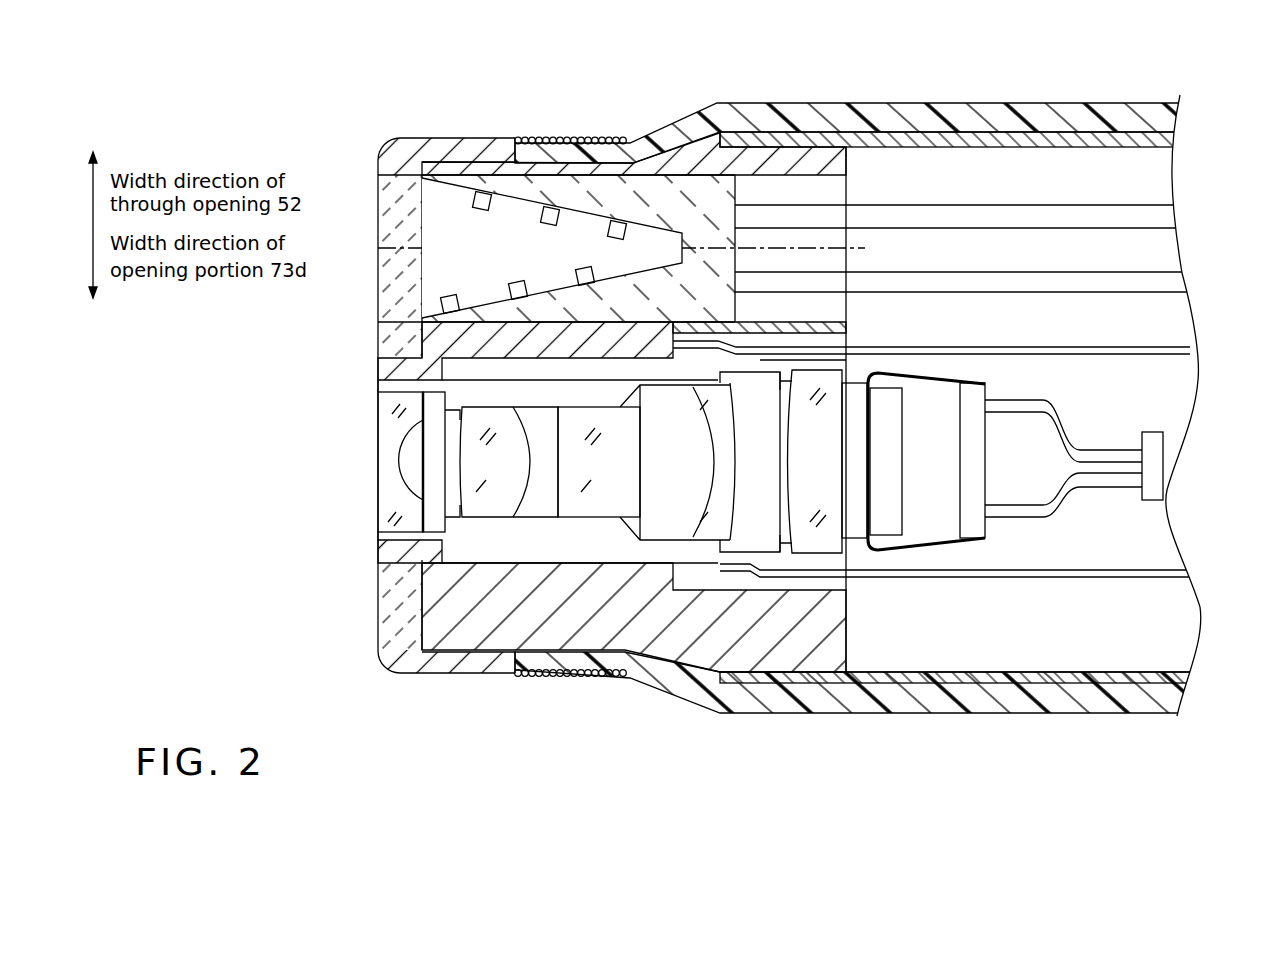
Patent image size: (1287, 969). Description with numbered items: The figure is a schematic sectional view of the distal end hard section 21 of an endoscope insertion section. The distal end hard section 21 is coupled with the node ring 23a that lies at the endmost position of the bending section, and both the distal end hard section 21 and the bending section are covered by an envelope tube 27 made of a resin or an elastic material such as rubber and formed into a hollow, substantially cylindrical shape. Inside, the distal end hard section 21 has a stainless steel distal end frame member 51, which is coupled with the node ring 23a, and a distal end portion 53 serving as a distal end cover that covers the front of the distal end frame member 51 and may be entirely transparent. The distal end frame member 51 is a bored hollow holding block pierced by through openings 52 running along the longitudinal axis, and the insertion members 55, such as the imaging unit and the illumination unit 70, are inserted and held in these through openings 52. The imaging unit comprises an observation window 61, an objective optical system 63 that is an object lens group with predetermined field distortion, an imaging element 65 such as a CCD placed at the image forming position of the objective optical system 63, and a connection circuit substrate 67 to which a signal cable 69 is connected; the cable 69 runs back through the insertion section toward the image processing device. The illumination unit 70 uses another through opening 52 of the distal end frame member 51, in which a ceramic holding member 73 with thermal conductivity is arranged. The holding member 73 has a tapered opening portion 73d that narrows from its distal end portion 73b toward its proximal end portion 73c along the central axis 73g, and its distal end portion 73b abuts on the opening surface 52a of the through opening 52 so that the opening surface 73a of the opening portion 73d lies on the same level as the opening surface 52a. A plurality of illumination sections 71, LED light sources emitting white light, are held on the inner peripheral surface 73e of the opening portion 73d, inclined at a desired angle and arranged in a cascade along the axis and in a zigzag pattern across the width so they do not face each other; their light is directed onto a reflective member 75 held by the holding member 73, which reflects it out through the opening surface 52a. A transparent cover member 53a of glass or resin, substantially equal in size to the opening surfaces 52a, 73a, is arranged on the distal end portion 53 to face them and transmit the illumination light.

The distal end hard section 21 is at (362, 122).
The node ring 23a is at (937, 137).
The envelope tube 27 is at (985, 110).
The distal end frame member 51 is at (470, 655).
The through opening 52 is at (848, 192).
The opening surface 52a is at (422, 228).
The distal end portion 53 is at (380, 163).
The cover member 53a is at (388, 247).
The insertion members 55 is at (1070, 157).
The observation window 61 is at (378, 497).
The objective optical system 63 is at (630, 552).
The imaging element 65 is at (892, 530).
The connection circuit substrate 67 is at (973, 536).
The cable 69 is at (1165, 472).
The illumination unit 70 is at (648, 150).
The illumination sections 71 is at (483, 195).
The holding member 73 is at (676, 195).
The opening surface 73a is at (449, 70).
The distal end portion 73b is at (500, 185).
The proximal end portion 73c is at (703, 188).
The opening portion 73d is at (428, 276).
The inner peripheral surface 73e is at (550, 208).
The central axis 73g is at (666, 224).
The reflective member 75 is at (490, 302).